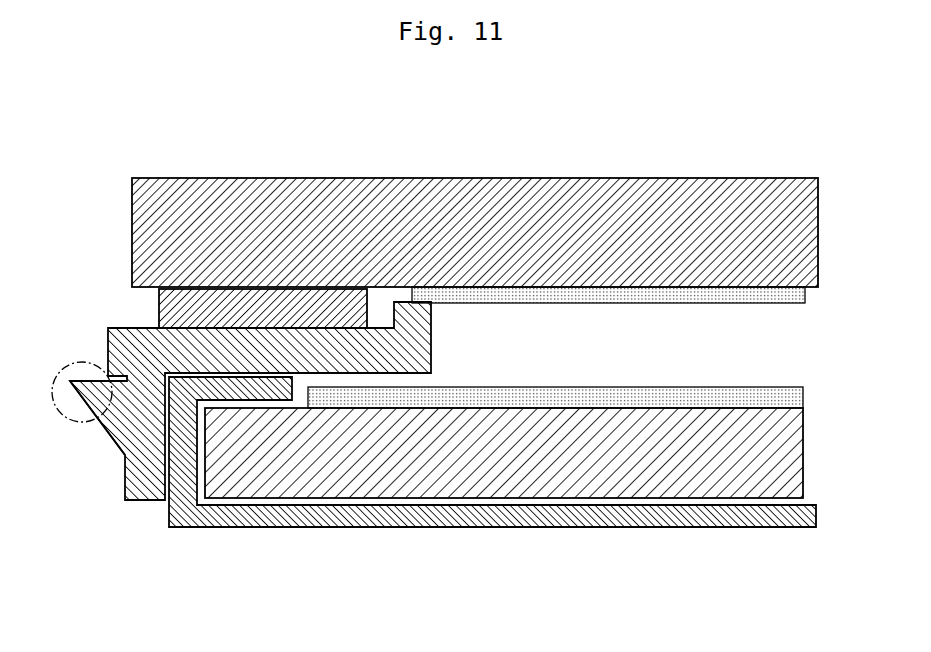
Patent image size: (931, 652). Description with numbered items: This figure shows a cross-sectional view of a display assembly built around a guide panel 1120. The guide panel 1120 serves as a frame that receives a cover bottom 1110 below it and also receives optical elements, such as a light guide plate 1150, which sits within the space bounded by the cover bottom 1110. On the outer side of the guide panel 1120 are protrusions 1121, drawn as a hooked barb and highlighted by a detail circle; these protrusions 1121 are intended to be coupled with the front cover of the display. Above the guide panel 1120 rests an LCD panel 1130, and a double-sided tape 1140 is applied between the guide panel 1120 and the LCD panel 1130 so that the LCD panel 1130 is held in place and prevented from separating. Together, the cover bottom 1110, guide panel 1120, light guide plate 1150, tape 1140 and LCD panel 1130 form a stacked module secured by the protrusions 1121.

The cover bottom 1110 is at (398, 530).
The guide panel 1120 is at (152, 357).
The protrusions 1121 is at (75, 427).
The LCD panel 1130 is at (463, 220).
The double-sided tape 1140 is at (160, 315).
The light guide plate 1150 is at (750, 457).